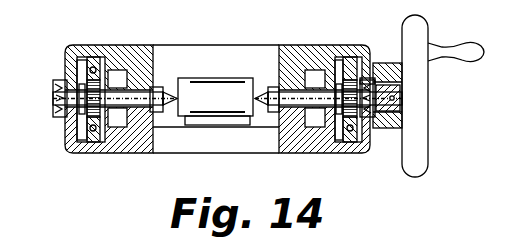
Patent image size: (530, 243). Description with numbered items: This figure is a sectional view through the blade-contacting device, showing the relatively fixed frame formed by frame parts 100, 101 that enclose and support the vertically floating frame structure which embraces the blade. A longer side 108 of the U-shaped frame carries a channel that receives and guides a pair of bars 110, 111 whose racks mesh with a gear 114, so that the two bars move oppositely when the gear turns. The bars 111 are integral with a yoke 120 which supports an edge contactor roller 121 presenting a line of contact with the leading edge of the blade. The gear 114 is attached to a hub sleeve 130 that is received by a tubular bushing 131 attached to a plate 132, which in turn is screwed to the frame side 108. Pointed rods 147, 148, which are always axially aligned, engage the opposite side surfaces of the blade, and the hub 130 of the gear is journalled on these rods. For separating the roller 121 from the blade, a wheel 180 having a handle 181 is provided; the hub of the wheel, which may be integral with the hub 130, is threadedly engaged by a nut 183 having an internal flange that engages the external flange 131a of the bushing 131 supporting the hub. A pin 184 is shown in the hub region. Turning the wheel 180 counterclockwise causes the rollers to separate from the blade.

The frame part 100 is at (210, 45).
The frame part 101 is at (78, 152).
The longer side 108 is at (94, 57).
The bar 110 is at (80, 62).
The bar 111 is at (88, 127).
The gear 114 is at (78, 104).
The yoke 120 is at (262, 125).
The edge contactor roller 121 is at (236, 78).
The hub sleeve 130 is at (60, 98).
The tubular bushing 131 is at (57, 81).
The external flange 131a is at (373, 64).
The plate 132 is at (80, 138).
The pointed rod 147 is at (270, 87).
The pointed rod 148 is at (156, 87).
The wheel 180 is at (429, 125).
The handle 181 is at (466, 57).
The nut 183 is at (386, 129).
The pin 184 is at (396, 98).